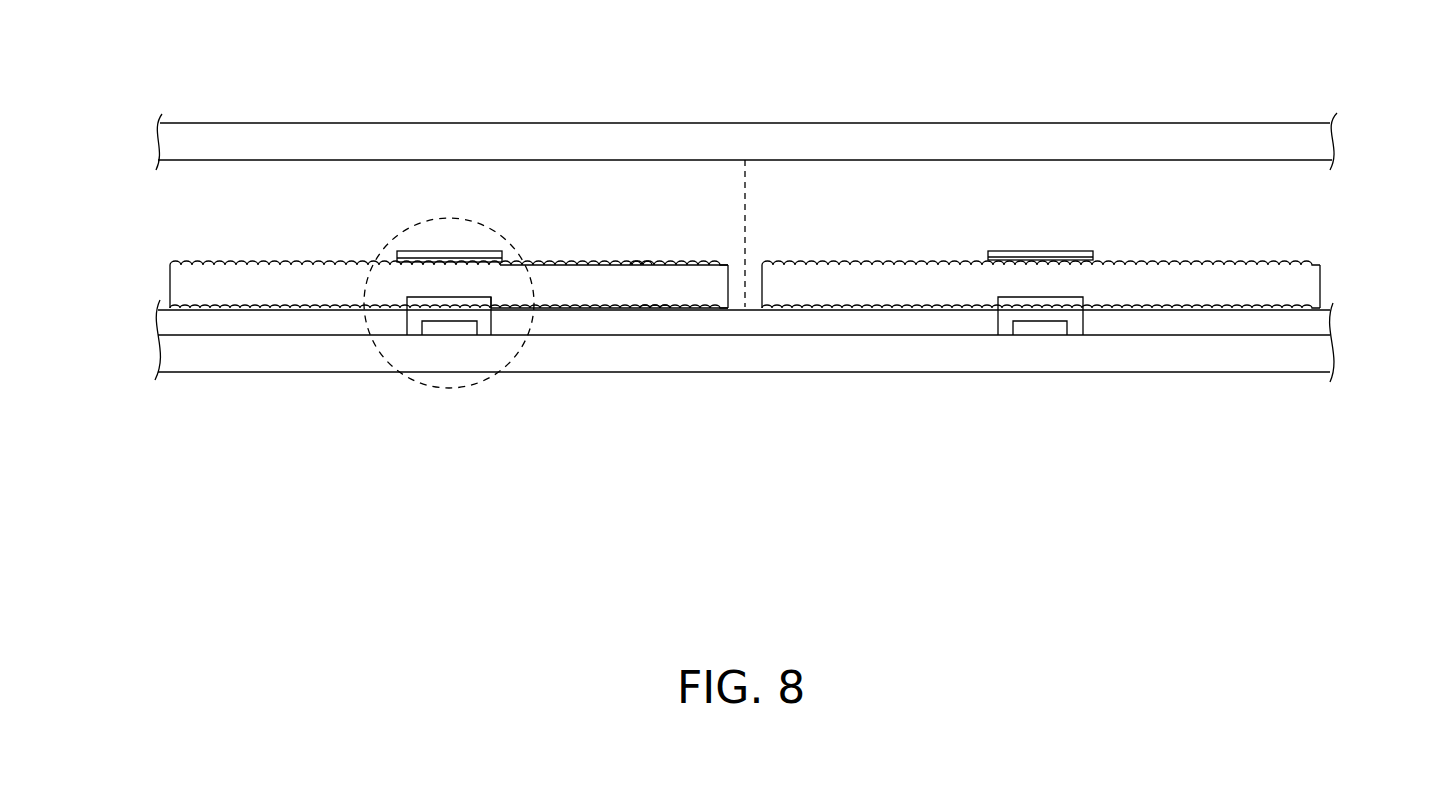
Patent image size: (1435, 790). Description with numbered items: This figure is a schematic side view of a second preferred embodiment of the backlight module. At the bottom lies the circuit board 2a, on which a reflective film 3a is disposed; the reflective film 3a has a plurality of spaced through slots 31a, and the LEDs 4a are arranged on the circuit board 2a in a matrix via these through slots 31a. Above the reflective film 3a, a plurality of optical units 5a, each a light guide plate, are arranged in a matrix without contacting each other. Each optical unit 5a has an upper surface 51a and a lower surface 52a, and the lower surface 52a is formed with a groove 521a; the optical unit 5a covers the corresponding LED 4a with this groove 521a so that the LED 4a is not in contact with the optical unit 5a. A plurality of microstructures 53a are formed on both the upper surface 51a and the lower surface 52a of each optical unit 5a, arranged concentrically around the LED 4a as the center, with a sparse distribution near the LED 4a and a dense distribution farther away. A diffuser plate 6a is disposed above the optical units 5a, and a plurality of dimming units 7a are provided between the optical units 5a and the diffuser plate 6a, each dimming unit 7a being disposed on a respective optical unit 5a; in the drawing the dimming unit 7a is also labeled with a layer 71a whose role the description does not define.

The circuit board 2a is at (183, 365).
The reflective film 3a is at (160, 327).
The through slot 31a is at (413, 332).
The LED 4a is at (453, 330).
The optical unit 5a is at (163, 278).
The upper surface 51a is at (533, 262).
The lower surface 52a is at (548, 307).
The groove 521a is at (485, 305).
The microstructures 53a is at (643, 260).
The diffuser plate 6a is at (178, 126).
The dimming unit 7a is at (406, 249).
The electrode layer 71a is at (397, 260).